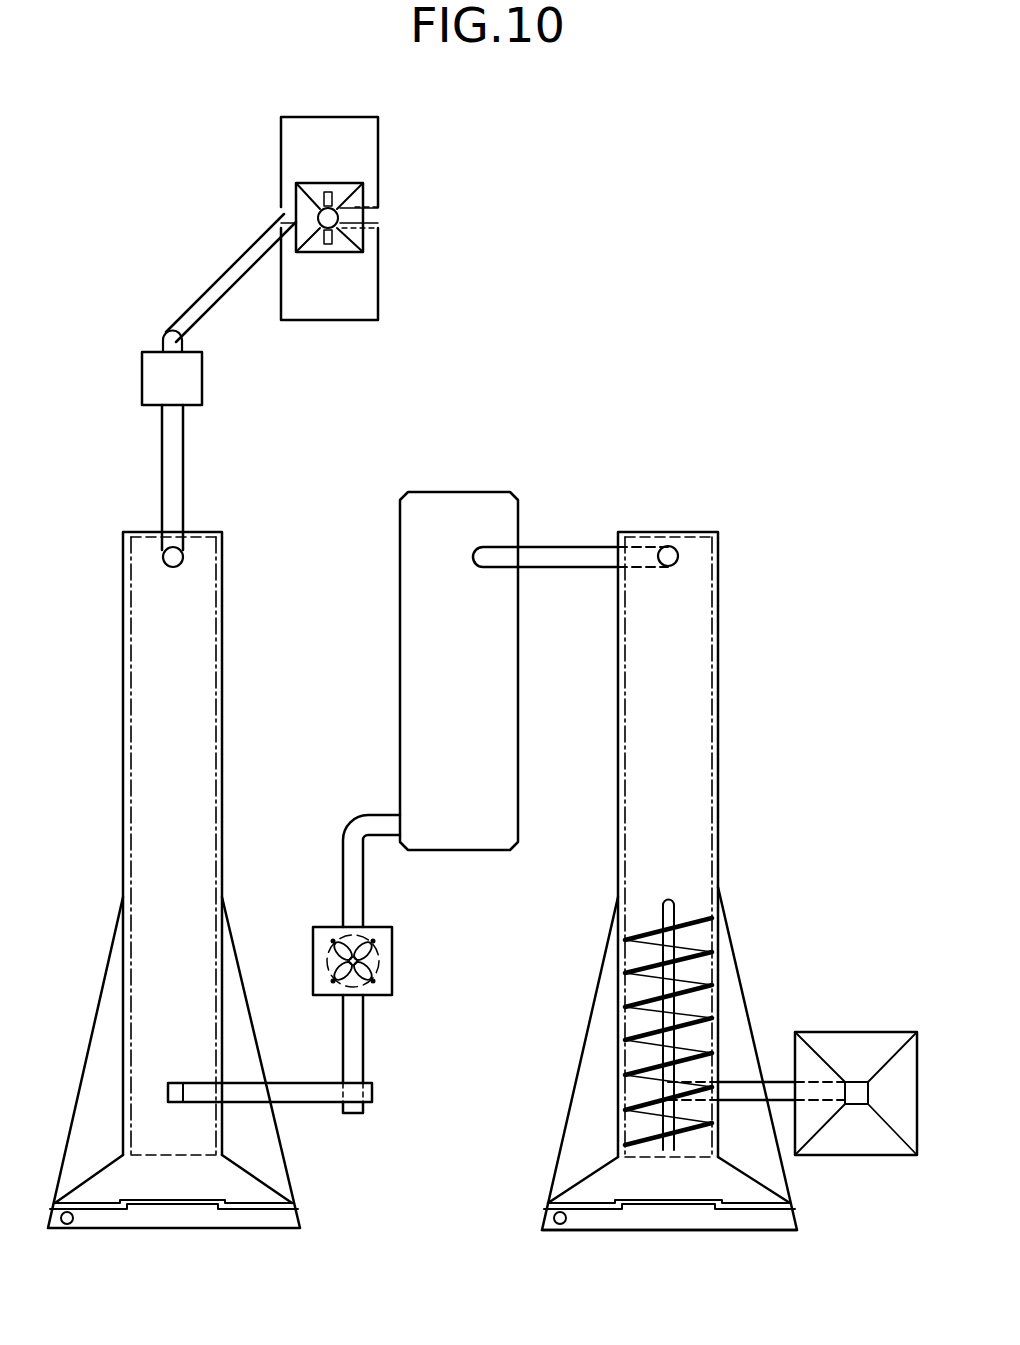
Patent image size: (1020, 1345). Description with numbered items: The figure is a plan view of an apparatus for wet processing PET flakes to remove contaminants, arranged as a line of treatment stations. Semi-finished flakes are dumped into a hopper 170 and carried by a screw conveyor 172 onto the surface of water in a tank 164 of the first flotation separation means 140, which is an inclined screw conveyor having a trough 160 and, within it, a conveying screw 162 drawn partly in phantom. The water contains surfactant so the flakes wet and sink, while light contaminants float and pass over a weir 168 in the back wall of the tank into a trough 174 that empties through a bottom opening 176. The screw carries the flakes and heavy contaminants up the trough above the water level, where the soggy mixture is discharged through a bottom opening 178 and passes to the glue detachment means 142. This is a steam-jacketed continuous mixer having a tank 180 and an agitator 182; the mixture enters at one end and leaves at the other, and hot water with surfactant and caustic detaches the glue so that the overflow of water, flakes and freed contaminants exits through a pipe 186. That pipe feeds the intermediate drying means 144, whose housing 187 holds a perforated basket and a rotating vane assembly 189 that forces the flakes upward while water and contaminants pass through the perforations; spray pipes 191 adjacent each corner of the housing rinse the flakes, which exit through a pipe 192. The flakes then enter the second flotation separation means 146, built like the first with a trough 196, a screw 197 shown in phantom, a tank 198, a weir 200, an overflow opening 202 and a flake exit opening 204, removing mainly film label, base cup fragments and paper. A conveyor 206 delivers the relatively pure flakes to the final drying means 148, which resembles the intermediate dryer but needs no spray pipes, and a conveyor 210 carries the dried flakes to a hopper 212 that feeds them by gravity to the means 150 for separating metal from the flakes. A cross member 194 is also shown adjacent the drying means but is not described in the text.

The first flotation separation means 140 is at (780, 620).
The glue detachment means 142 is at (526, 470).
The intermediate drying means 144 is at (441, 941).
The second flotation separation means 146 is at (265, 769).
The final drying means 148 is at (204, 392).
The means for separating metal 150 is at (350, 206).
The trough 160 is at (718, 782).
The conveying screw 162 is at (694, 920).
The tank 164 is at (752, 985).
The weir 168 is at (663, 1208).
The hopper 170 is at (858, 1032).
The screw conveyor 172 is at (770, 1082).
The trough 174 is at (697, 1232).
The bottom opening 176 is at (560, 1230).
The bottom opening 178 is at (668, 545).
The tank 180 is at (518, 717).
The agitator 182 is at (550, 545).
The pipe 186 is at (386, 812).
The housing 187 is at (382, 927).
The rotating vane assembly 189 is at (345, 995).
The spray pipes 191 is at (390, 993).
The pipe 192 is at (364, 1045).
The cross bar 194 is at (315, 1103).
The trough 196 is at (222, 690).
The screw 197 is at (218, 613).
The tank 198 is at (225, 903).
The weir 200 is at (172, 1208).
The overflow opening 202 is at (68, 1224).
The flake exit opening 204 is at (182, 552).
The conveyor 206 is at (184, 470).
The conveyor 210 is at (230, 272).
The hopper 212 is at (365, 240).